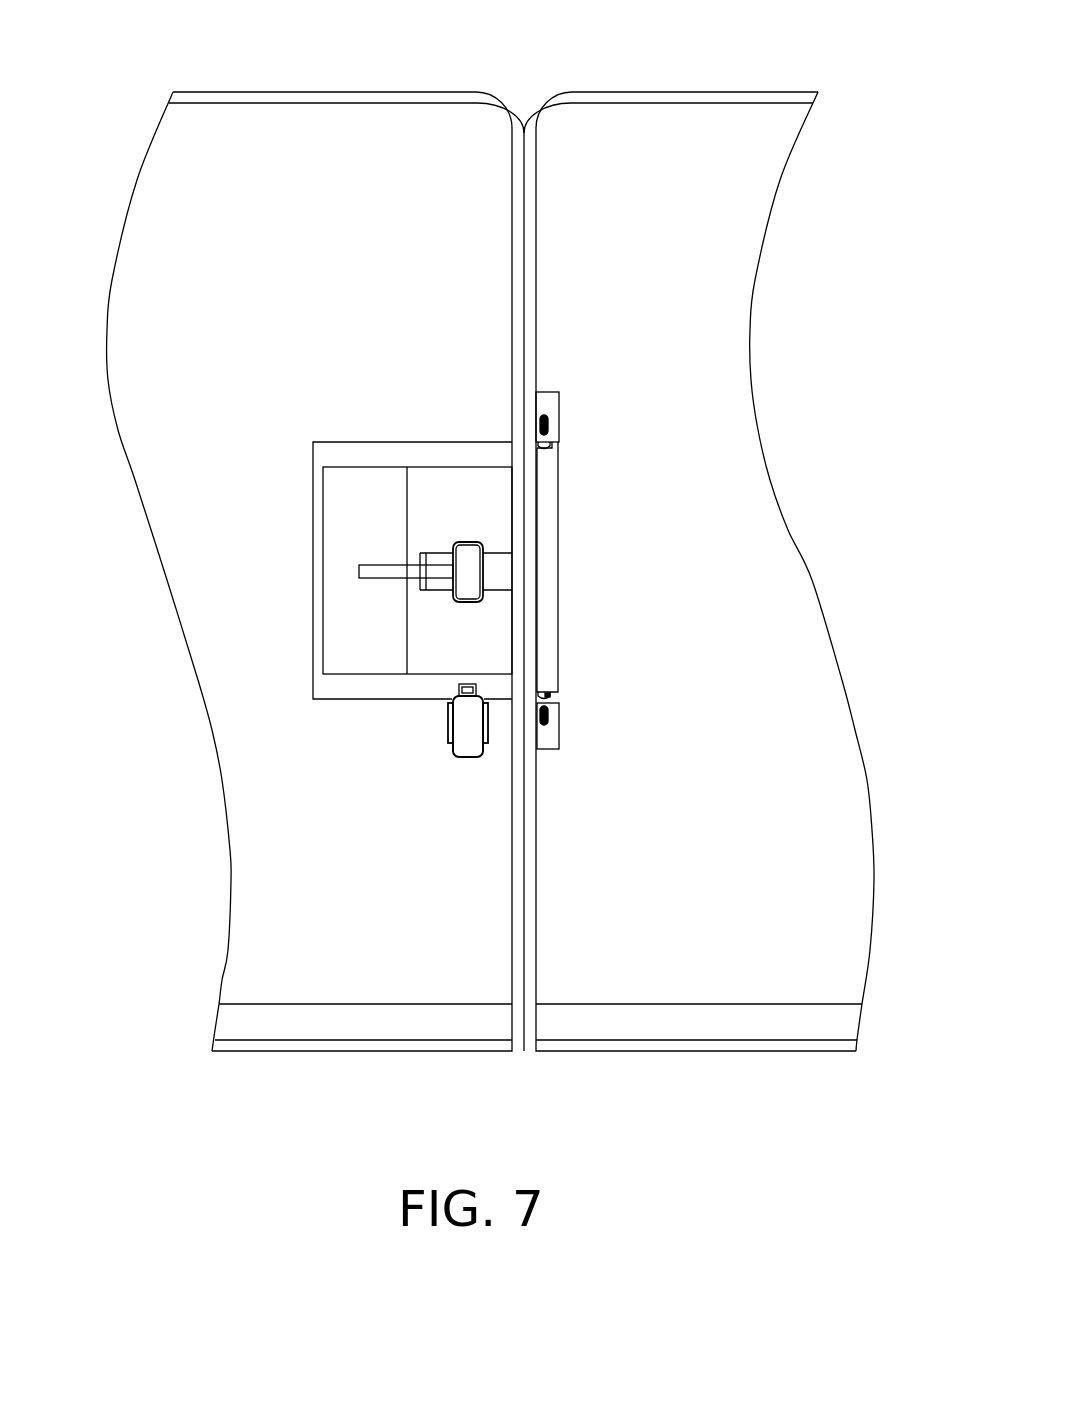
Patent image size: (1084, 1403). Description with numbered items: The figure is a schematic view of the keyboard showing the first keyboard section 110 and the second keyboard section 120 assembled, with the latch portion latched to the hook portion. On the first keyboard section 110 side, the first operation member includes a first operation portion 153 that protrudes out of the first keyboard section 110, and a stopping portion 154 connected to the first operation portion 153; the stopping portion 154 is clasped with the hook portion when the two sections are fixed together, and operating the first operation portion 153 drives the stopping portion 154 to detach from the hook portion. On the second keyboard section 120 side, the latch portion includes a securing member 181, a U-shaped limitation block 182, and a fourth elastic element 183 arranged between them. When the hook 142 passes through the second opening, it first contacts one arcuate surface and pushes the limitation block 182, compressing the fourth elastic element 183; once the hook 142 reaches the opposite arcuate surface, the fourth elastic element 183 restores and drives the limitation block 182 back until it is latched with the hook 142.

The first keyboard section 110 is at (265, 138).
The second keyboard section 120 is at (625, 136).
The hook 142 is at (559, 703).
The first operation portion 153 is at (469, 738).
The stopping portion 154 is at (458, 685).
The securing member 181 is at (547, 745).
The limitation block 182 is at (548, 694).
The fourth elastic element 183 is at (544, 727).